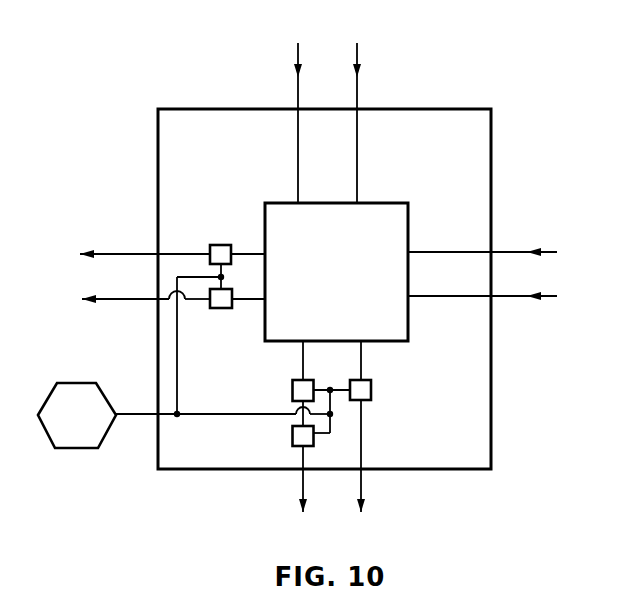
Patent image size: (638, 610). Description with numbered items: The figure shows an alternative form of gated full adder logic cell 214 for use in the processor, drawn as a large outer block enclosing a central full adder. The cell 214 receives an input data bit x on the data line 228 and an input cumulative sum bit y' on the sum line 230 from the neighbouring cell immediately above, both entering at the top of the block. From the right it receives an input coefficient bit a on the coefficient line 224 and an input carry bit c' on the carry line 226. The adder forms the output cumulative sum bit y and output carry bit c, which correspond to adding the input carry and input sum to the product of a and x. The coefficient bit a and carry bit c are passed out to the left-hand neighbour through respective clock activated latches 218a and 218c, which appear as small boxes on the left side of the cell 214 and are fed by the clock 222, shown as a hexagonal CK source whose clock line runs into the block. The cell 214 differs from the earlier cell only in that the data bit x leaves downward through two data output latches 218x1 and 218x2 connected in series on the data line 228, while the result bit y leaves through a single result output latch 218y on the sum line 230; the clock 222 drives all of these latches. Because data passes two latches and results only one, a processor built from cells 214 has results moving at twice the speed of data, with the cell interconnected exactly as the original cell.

The gated full adder logic cell 214 is at (491, 121).
The clock activated latch for coefficient output bit 218a is at (213, 240).
The clock activated latch for carry output bit 218c is at (221, 309).
The first data output latch 218x1 is at (292, 389).
The second data output latch 218x2 is at (292, 438).
The result output latch 218y is at (371, 390).
The clock 222 is at (55, 449).
The coefficient bit line a 224 is at (85, 251).
The carry bit line c 226 is at (86, 306).
The data bit line x 228 is at (294, 73).
The cumulative sum bit line y 230 is at (362, 72).